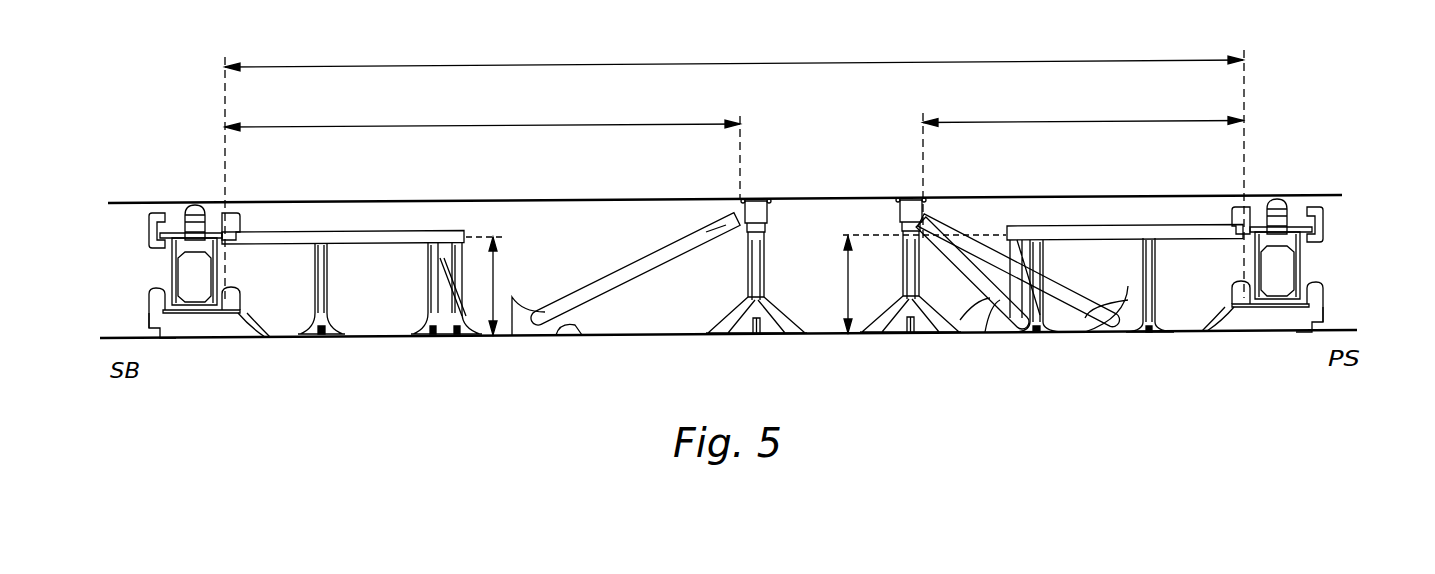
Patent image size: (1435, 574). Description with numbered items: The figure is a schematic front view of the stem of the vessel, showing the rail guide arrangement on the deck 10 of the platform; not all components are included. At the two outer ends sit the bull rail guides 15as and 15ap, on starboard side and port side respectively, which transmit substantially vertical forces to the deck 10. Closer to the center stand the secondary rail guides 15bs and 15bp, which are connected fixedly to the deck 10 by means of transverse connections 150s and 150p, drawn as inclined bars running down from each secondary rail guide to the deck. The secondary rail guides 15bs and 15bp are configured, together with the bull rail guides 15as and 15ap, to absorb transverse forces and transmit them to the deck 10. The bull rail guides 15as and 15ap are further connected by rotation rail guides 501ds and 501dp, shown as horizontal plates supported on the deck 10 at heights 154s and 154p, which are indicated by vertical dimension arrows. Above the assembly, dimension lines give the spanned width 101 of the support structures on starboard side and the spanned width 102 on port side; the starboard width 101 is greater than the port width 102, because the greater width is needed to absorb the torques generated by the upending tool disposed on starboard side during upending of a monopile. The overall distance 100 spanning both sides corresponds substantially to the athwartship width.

The deck 10 is at (283, 338).
The distance 100 is at (733, 61).
The spanned width 101 is at (482, 121).
The spanned width 102 is at (1085, 117).
The bull rail guide 15as is at (192, 273).
The bull rail guide 15ap is at (1278, 263).
The secondary rail guide 15bs is at (757, 200).
The secondary rail guide 15bp is at (910, 200).
The rotation rail guide 501ds is at (360, 231).
The rotation rail guide 501dp is at (1105, 225).
The transverse connection 150s is at (637, 273).
The transverse connection 150p is at (970, 267).
The height 154s is at (493, 287).
The height 154p is at (848, 283).